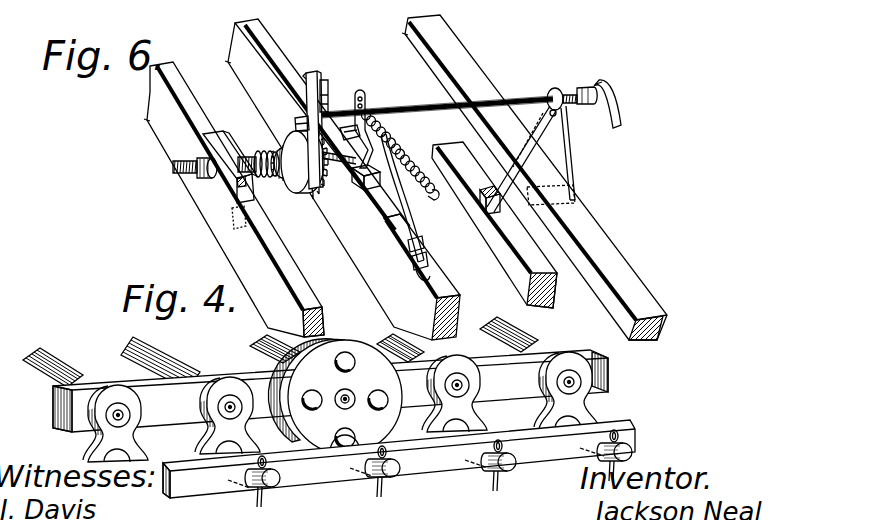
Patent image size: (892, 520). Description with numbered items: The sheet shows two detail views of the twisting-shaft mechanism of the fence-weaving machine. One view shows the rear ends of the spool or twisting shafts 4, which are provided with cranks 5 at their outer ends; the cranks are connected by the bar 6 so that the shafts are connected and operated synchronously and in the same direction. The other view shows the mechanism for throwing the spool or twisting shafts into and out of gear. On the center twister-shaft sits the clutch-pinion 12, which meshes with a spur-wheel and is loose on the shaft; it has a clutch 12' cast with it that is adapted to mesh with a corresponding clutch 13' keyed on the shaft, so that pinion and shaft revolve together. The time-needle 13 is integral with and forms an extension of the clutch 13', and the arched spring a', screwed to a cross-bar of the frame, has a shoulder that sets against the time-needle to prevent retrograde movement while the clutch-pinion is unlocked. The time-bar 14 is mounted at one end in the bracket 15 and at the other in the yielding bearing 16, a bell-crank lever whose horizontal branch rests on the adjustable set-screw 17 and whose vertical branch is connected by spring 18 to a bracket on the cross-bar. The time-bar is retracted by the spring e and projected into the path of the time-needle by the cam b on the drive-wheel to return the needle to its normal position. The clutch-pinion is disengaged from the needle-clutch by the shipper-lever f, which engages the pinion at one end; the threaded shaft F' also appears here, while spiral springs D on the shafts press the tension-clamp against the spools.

In FIG. 6, the spiral spring D is at (195, 174).
In FIG. 6, the shipper-lever f is at (256, 190).
In FIG. 6, the threaded shaft F' is at (255, 153).
In FIG. 6, the clutch-pinion 12 is at (276, 155).
In FIG. 6, the clutch 12' is at (318, 176).
In FIG. 6, the time-needle 13 is at (321, 115).
In FIG. 6, the clutch 13' is at (291, 116).
In FIG. 6, the arched spring a' is at (338, 87).
In FIG. 6, the time-bar 14 is at (491, 110).
In FIG. 6, the bracket 15 is at (537, 97).
In FIG. 6, the yielding bearing 16 is at (356, 166).
In FIG. 6, the adjustable stop or set-screw 17 is at (392, 186).
In FIG. 6, the spring 18 is at (392, 146).
In FIG. 6, the spring e is at (593, 83).
In FIG. 6, the cam b is at (620, 111).
In FIG. 4, the spool or twisting shafts 4 is at (36, 356).
In FIG. 4, the cranks 5 is at (118, 392).
In FIG. 4, the bar 6 is at (399, 463).